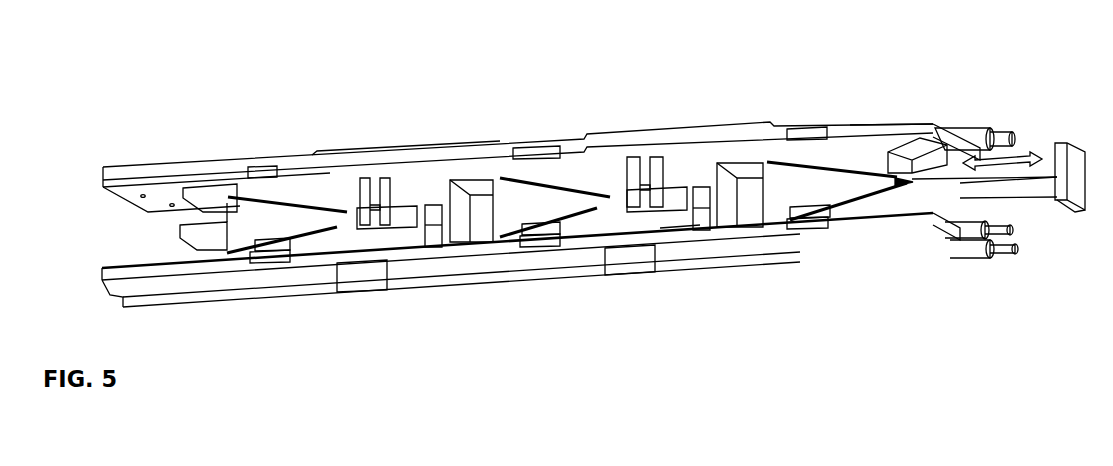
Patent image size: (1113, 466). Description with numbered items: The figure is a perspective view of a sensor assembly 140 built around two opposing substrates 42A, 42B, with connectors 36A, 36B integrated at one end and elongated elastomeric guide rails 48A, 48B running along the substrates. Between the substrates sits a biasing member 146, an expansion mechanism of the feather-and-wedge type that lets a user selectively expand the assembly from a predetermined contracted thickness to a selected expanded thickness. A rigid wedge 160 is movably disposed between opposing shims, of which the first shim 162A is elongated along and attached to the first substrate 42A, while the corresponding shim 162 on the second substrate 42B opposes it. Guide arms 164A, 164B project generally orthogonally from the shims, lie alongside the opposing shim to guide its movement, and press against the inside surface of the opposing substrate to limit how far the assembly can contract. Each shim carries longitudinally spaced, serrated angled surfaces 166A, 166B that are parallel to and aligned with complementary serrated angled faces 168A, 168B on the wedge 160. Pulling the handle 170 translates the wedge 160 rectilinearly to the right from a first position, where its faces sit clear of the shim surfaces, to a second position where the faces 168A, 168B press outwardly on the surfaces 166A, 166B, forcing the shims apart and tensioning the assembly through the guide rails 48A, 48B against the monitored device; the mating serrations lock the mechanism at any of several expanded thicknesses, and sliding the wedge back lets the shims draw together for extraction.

The sensor assembly 140 is at (300, 73).
The biasing member 146 is at (138, 240).
The elongated guide rail 48B is at (117, 167).
The second substrate 42B is at (101, 184).
The elongated guide rail 48A is at (123, 298).
The first substrate 42A is at (102, 268).
The angled face 168B is at (245, 200).
The angled surface 166B is at (278, 215).
The guide arm 164A is at (362, 192).
The guide arm 164B is at (420, 233).
The angled face 168A is at (322, 228).
The angled surface 166A is at (275, 237).
The upper housing block 162 is at (850, 153).
The first shim 162A is at (670, 223).
The wedge 160 is at (857, 177).
The connector 36B is at (977, 127).
The connector 36A is at (948, 233).
The handle 170 is at (1015, 188).